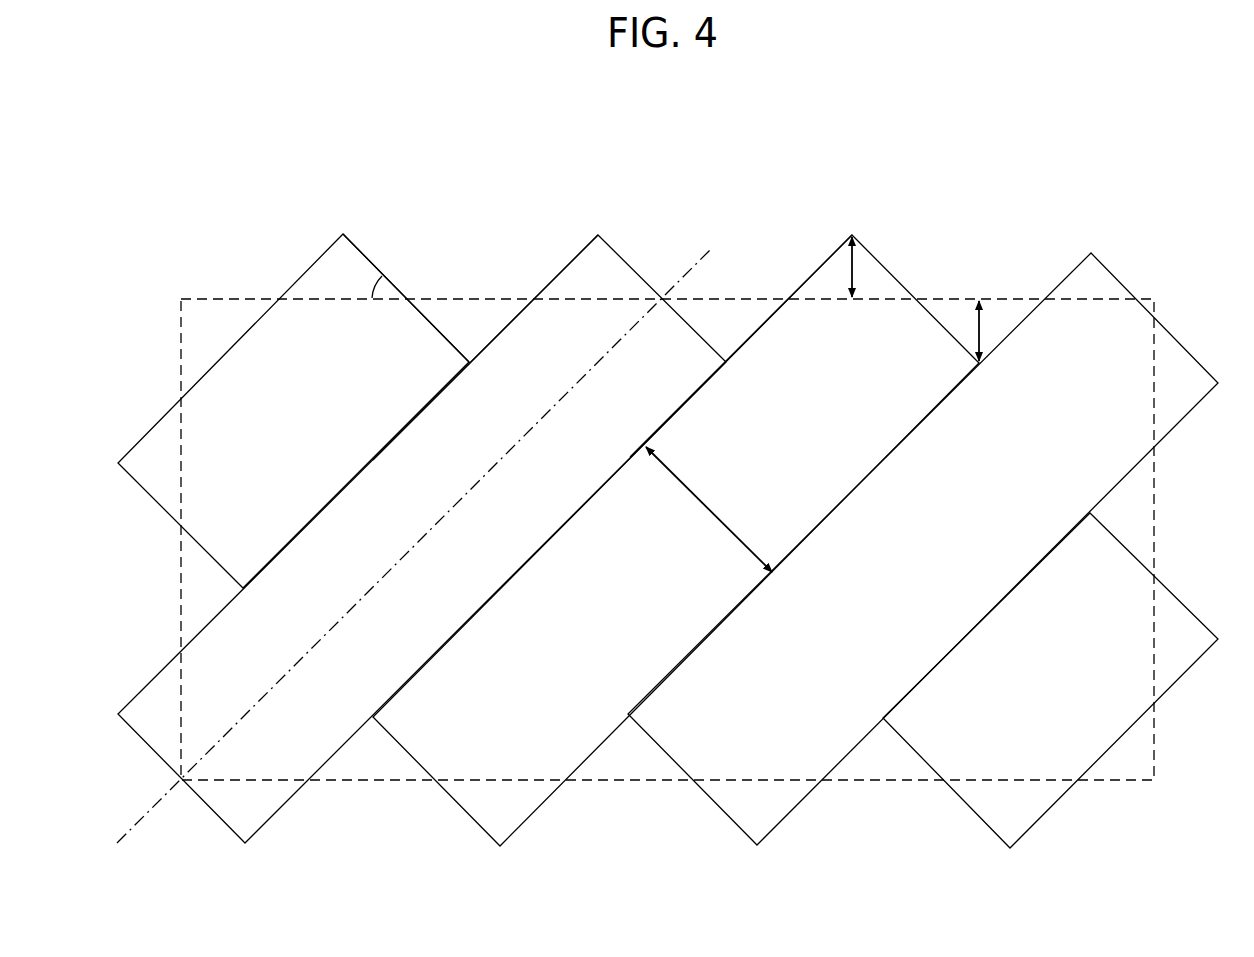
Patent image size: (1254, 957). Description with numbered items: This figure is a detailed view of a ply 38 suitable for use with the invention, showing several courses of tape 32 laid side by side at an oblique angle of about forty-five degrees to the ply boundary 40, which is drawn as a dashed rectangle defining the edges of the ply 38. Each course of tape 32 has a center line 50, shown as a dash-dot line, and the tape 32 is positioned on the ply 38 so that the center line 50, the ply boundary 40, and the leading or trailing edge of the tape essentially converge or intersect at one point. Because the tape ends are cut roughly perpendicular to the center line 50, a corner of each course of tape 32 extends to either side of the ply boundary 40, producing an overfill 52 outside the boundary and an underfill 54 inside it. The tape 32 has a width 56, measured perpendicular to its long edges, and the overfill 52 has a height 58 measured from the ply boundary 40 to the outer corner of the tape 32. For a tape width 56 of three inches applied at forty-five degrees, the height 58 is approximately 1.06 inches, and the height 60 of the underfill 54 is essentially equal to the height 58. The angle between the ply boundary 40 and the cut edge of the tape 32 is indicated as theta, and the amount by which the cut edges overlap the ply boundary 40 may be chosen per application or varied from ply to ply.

The tape 32 is at (320, 412).
The ply 38 is at (899, 118).
The ply boundary 40 is at (463, 298).
The center line 50 is at (721, 242).
The overfill 52 is at (597, 270).
The underfill 54 is at (723, 325).
The width 56 is at (695, 497).
The height of the overfill 58 is at (856, 259).
The height of the underfill 60 is at (980, 320).